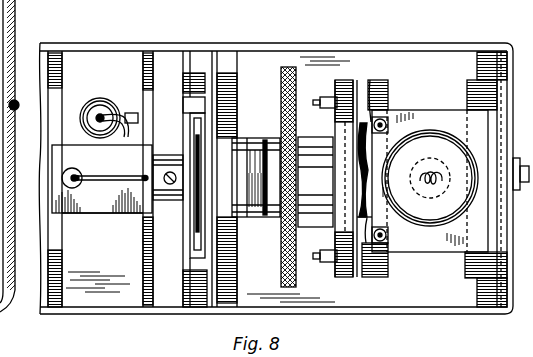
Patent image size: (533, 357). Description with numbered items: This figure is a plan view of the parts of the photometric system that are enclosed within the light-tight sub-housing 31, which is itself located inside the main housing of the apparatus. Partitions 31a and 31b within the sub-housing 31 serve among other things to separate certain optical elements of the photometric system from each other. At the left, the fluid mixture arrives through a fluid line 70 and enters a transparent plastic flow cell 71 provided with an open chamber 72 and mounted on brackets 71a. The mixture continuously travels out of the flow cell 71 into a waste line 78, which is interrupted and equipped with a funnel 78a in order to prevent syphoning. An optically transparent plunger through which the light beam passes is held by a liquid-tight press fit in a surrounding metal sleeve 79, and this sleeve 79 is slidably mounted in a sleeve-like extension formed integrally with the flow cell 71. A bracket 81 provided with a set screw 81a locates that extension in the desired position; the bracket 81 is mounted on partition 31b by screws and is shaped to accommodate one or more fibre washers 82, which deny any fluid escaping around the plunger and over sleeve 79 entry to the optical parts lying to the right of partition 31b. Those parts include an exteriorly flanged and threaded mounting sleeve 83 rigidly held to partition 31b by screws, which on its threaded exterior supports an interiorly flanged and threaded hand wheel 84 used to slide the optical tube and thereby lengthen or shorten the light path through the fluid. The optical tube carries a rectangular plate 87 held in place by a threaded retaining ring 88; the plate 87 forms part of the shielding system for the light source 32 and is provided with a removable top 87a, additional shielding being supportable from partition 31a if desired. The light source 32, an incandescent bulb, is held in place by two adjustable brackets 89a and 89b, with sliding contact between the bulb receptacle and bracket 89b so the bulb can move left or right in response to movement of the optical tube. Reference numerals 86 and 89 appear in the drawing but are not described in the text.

The light-tight sub-housing 31 is at (492, 24).
The partition 31a is at (477, 66).
The partition 31b is at (210, 73).
The light source 32 is at (442, 126).
The fluid line 70 is at (130, 176).
The flow cell 71 is at (97, 216).
The brackets 71a is at (58, 258).
The open chamber 72 is at (80, 160).
The waste line 78 is at (133, 112).
The funnel 78a is at (100, 98).
The metal sleeve 79 is at (232, 213).
The bracket 81 is at (183, 213).
The set screw 81a is at (168, 138).
The fibre washers 82 is at (182, 225).
The mounting sleeve 83 is at (250, 143).
The hand wheel 84 is at (280, 81).
The upper terminal 86 is at (328, 148).
The rectangular plate 87 is at (343, 280).
The removable top 87a is at (370, 90).
The threaded retaining ring 88 is at (370, 212).
The lower insulating block 89 is at (388, 262).
The adjustable bracket 89a is at (388, 88).
The adjustable bracket 89b is at (476, 90).